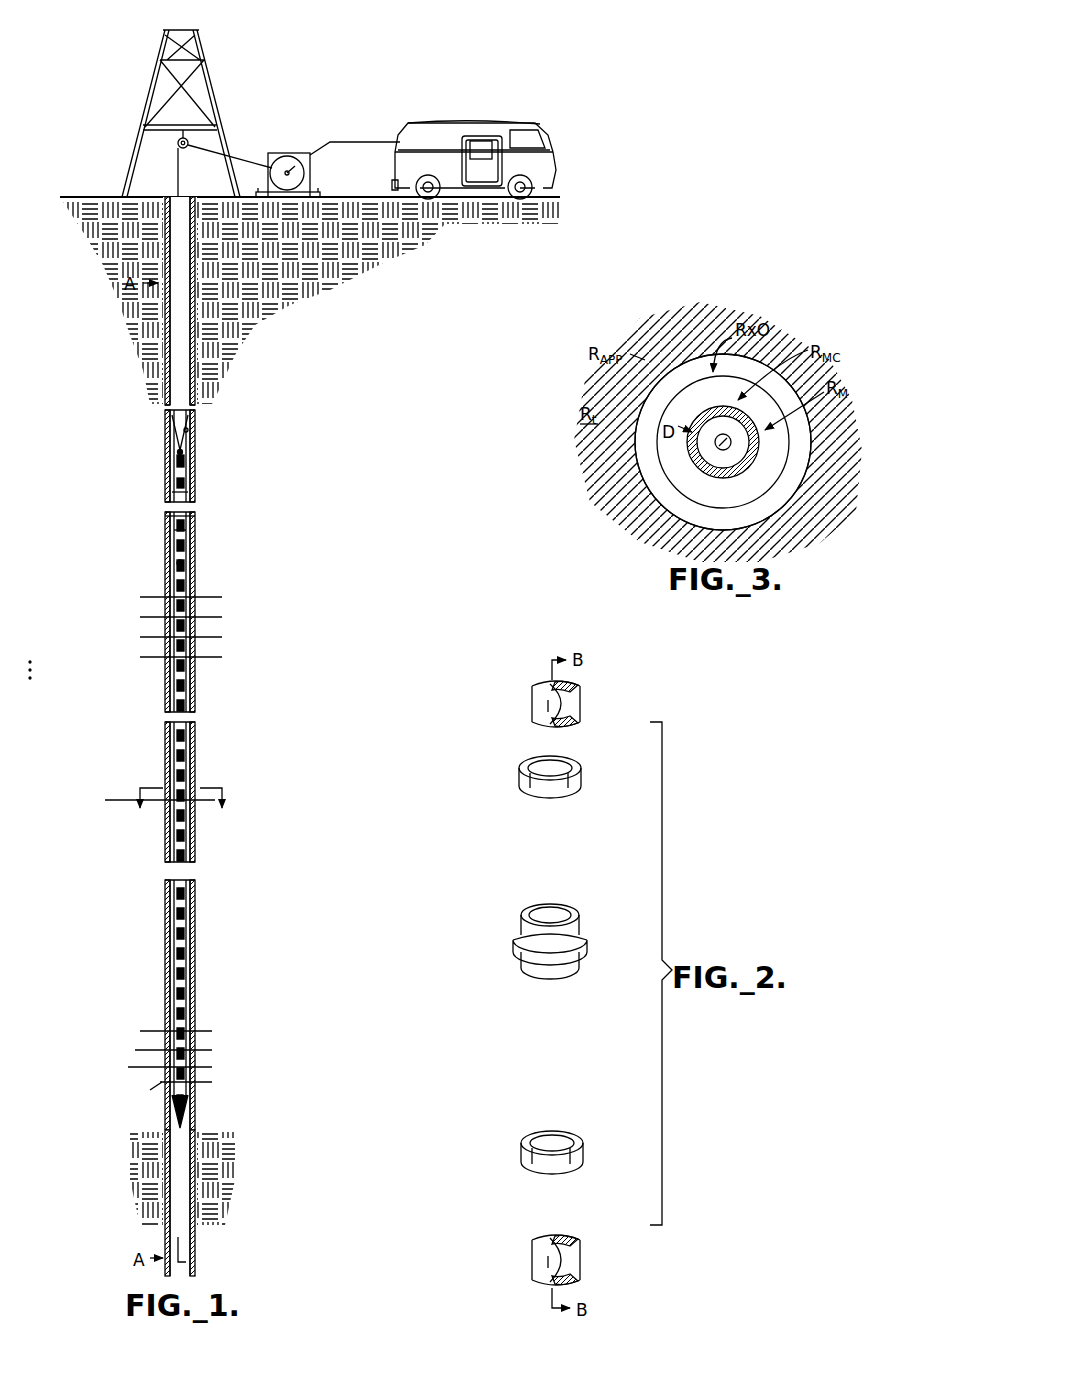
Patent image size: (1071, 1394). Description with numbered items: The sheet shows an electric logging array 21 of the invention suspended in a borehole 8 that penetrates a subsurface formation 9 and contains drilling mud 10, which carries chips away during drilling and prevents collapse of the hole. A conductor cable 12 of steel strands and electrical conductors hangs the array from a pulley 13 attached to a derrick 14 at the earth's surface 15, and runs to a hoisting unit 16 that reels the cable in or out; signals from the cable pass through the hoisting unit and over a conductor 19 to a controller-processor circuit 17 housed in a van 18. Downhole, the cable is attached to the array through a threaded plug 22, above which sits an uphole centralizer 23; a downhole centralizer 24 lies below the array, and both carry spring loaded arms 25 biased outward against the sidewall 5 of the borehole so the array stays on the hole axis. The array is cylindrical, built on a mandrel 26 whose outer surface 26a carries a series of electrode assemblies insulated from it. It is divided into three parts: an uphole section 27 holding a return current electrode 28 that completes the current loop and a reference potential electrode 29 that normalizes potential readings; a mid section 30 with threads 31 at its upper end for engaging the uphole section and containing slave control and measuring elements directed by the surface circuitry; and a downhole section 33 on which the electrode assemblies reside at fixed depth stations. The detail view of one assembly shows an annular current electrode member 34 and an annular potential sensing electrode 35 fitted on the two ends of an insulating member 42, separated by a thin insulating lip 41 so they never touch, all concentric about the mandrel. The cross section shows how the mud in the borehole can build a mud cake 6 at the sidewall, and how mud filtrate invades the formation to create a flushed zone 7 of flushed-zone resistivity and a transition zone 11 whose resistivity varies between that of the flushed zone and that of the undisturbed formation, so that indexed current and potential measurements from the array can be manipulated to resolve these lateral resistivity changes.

In FIG. 1, the sidewall 5 is at (190, 555).
In FIG. 3, the sidewall 5 is at (640, 505).
In FIG. 3, the mud cake 6 is at (750, 478).
In FIG. 3, the flushed zone 7 is at (678, 455).
In FIG. 1, the borehole 8 is at (182, 373).
In FIG. 3, the borehole 8 is at (754, 465).
In FIG. 1, the subsurface formation 9 is at (344, 304).
In FIG. 3, the subsurface formation 9 is at (678, 316).
In FIG. 1, the drilling mud 10 is at (170, 345).
In FIG. 3, the drilling mud 10 is at (742, 443).
In FIG. 3, the transition zone 11 is at (668, 368).
In FIG. 1, the conductor cable 12 is at (180, 296).
In FIG. 1, the pulley 13 is at (178, 146).
In FIG. 1, the derrick 14 is at (215, 90).
In FIG. 1, the earth's surface 15 is at (83, 197).
In FIG. 1, the hoisting unit 16 is at (312, 172).
In FIG. 1, the controller-processor circuit 17 is at (476, 150).
In FIG. 1, the van 18 is at (474, 145).
In FIG. 1, the conductor 19 is at (364, 142).
In FIG. 1, the electric logging array 21 is at (144, 770).
In FIG. 3, the electric logging array 21 is at (700, 450).
In FIG. 1, the threaded plug 22 is at (175, 462).
In FIG. 1, the uphole centralizer 23 is at (192, 441).
In FIG. 1, the downhole centralizer 24 is at (192, 1124).
In FIG. 1, the spring loaded arms 25 is at (188, 432).
In FIG. 1, the mandrel 26 is at (196, 518).
In FIG. 2, the mandrel 26 is at (568, 704).
In FIG. 1, the outer surface 26a is at (192, 498).
In FIG. 2, the outer surface 26a is at (542, 707).
In FIG. 1, the uphole section 27 is at (167, 465).
In FIG. 1, the return current electrode 28 is at (188, 460).
In FIG. 1, the reference potential electrode 29 is at (188, 484).
In FIG. 1, the mid section 30 is at (161, 603).
In FIG. 1, the threads 31 is at (190, 534).
In FIG. 1, the downhole section 33 is at (58, 588).
In FIG. 2, the current electrode member 34 is at (582, 761).
In FIG. 2, the potential sensing electrode 35 is at (584, 1138).
In FIG. 2, the insulating lip 41 is at (569, 939).
In FIG. 2, the insulating member 42 is at (579, 919).